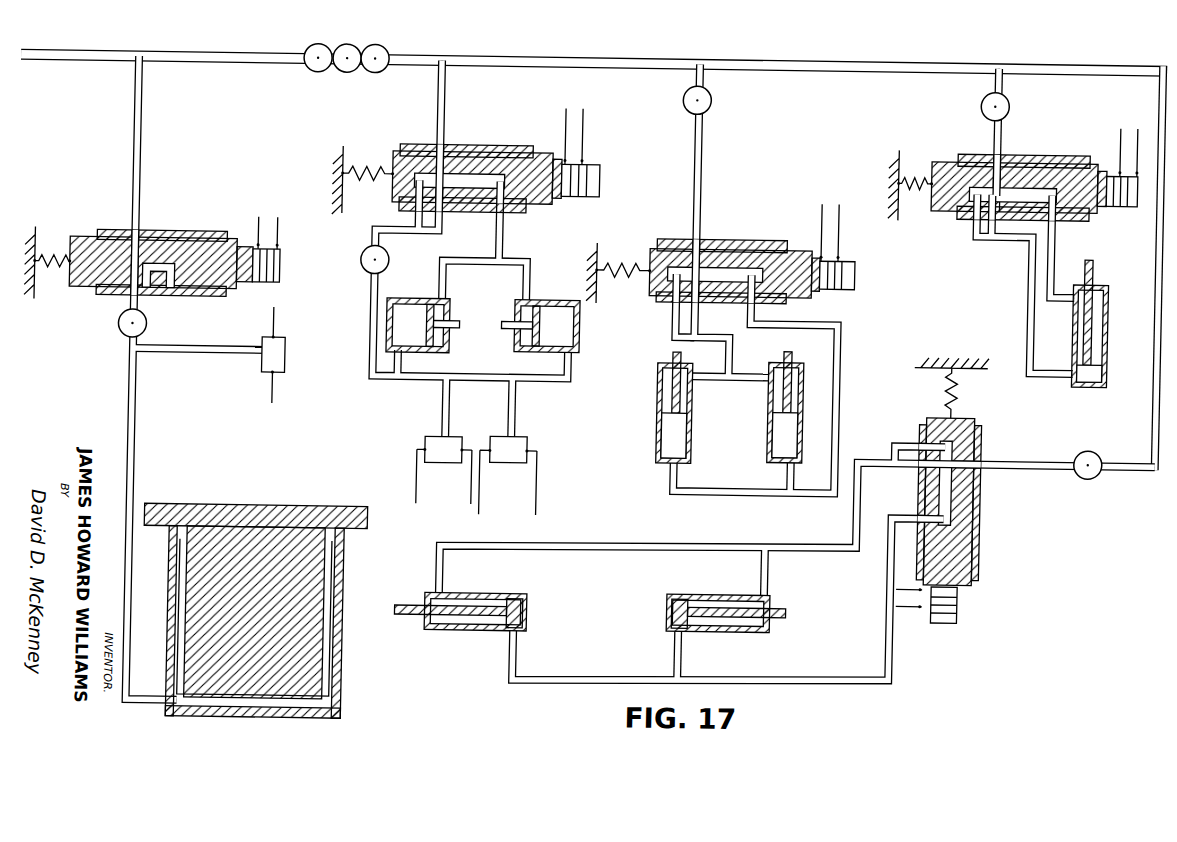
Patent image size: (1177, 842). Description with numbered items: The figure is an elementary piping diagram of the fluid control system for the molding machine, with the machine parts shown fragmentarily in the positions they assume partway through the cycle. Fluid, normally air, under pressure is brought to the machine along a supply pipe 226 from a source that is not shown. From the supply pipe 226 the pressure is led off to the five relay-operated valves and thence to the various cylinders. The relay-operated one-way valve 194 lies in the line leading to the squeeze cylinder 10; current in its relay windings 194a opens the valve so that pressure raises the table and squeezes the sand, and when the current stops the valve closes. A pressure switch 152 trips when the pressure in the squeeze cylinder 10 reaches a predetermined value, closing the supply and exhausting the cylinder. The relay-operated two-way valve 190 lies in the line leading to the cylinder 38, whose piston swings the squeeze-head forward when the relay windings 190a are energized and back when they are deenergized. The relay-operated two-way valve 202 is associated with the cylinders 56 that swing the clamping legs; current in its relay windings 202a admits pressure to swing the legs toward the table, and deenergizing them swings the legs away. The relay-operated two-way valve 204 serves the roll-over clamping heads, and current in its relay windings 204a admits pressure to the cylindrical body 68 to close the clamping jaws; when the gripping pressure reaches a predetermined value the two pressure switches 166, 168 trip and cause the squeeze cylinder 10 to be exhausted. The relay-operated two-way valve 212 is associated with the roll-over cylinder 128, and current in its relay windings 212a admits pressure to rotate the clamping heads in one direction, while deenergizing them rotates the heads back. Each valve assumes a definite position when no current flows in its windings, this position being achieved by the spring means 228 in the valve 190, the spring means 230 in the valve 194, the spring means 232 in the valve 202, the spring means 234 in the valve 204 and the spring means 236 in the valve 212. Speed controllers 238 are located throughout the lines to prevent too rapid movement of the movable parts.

The supply pipe 226 is at (108, 60).
The speed controller 238 is at (343, 50).
The spring means 234 is at (356, 168).
The relay-operated two-way valve 204 is at (479, 152).
The relay-operated one-way valve 194 is at (168, 243).
The relay windings 194a is at (278, 286).
The spring means 230 is at (60, 283).
The pressure switch 152 is at (285, 356).
The cylindrical body 68 is at (414, 301).
The relay windings 204a is at (564, 200).
The relay-operated two-way valve 212 is at (748, 245).
The relay windings 212a is at (830, 288).
The spring means 236 is at (610, 290).
The cylinder 128 is at (657, 440).
The pressure switch 166 is at (426, 445).
The pressure switch 168 is at (520, 445).
The spring means 228 is at (924, 165).
The relay-operated two-way valve 190 is at (1039, 148).
The relay windings 190a is at (1086, 204).
The cylinder 38 is at (1103, 337).
The spring means 232 is at (945, 391).
The relay-operated two-way valve 202 is at (987, 516).
The relay windings 202a is at (984, 599).
The cylinder 56 is at (488, 595).
The squeeze cylinder 10 is at (347, 578).